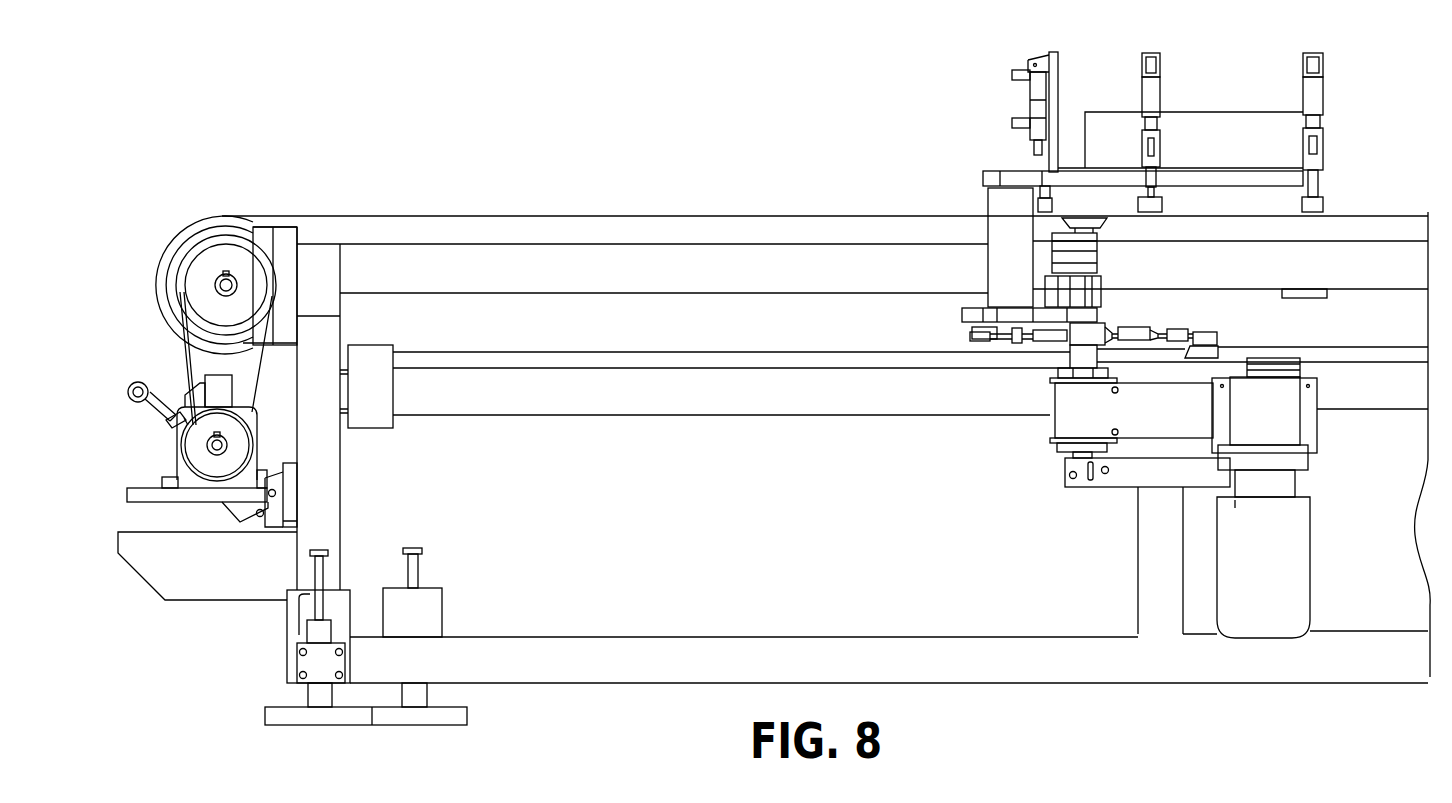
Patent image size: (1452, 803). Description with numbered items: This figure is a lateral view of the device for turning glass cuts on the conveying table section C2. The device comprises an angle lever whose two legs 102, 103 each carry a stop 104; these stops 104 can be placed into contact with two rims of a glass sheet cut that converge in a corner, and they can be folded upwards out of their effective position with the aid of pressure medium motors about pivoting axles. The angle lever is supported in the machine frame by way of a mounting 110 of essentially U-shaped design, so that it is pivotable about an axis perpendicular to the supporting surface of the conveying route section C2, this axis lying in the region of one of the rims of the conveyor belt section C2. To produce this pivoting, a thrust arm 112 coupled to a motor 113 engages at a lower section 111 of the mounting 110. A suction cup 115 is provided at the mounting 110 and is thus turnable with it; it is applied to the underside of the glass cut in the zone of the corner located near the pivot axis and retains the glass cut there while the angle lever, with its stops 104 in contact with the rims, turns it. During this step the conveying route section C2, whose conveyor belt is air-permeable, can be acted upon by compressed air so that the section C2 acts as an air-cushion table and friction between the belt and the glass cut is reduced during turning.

The conveying table section C2 is at (519, 216).
The leg of the angle lever 102 is at (1062, 122).
The leg of the angle lever 103 is at (1215, 128).
The stop 104 is at (1316, 195).
The mounting 110 is at (998, 222).
The lower section of the mounting 111 is at (962, 314).
The thrust arm 112 is at (1043, 338).
The motor 113 is at (1290, 425).
The suction cup 115 is at (1103, 224).